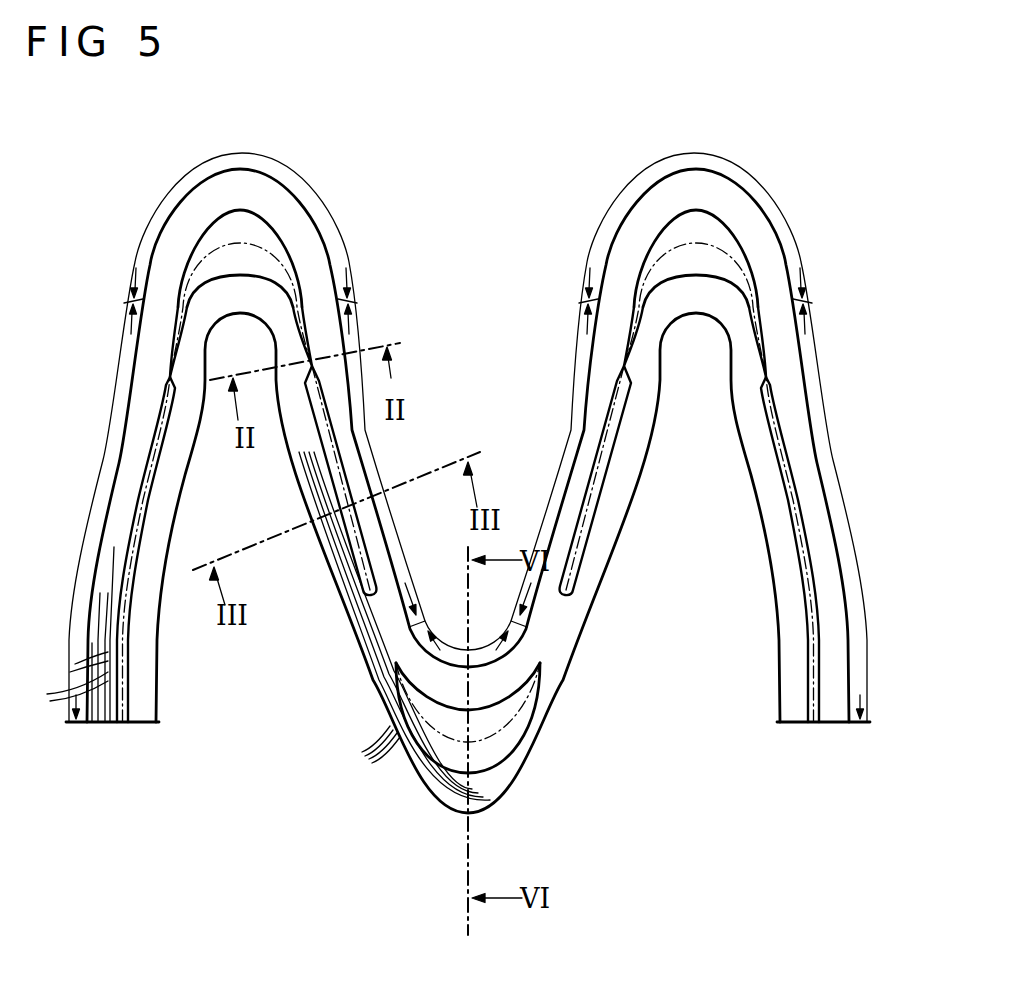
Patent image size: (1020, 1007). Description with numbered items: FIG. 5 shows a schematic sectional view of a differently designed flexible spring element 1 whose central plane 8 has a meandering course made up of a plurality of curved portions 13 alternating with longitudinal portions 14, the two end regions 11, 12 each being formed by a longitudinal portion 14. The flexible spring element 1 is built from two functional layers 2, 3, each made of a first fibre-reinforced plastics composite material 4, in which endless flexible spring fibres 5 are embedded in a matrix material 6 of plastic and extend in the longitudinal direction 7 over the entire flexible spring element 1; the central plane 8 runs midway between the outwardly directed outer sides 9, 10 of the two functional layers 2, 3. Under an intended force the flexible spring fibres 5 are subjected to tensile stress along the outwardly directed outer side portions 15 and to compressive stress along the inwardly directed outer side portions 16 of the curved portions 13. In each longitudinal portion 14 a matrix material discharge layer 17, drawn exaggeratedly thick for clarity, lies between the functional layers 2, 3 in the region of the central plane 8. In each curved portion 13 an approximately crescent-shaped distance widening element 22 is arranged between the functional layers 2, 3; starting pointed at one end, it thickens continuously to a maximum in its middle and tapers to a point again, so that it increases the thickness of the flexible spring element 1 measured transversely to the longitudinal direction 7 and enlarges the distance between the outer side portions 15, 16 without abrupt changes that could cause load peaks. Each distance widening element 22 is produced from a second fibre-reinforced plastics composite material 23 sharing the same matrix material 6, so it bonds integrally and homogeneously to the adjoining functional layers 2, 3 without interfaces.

The flexible spring element 1 is at (728, 133).
The functional layer 2 is at (120, 485).
The functional layer 3 is at (186, 466).
The first fibre-reinforced plastics composite material 4 is at (112, 583).
The flexible spring fibres 5 is at (214, 714).
The matrix material 6 is at (95, 625).
The longitudinal direction 7 is at (658, 137).
The central plane 8 is at (128, 630).
The outer side 9 is at (101, 524).
The outer side 10 is at (192, 490).
The end region 11 is at (168, 726).
The end region 12 is at (757, 701).
The curved portion 13 is at (247, 151).
The longitudinal portion 14 is at (110, 430).
The outer side portion 15 is at (201, 180).
The outer side portion 16 is at (232, 316).
The matrix material discharge layer 17 is at (124, 680).
The distance widening element 22 is at (240, 230).
The second fibre-reinforced plastics composite material 23 is at (268, 236).